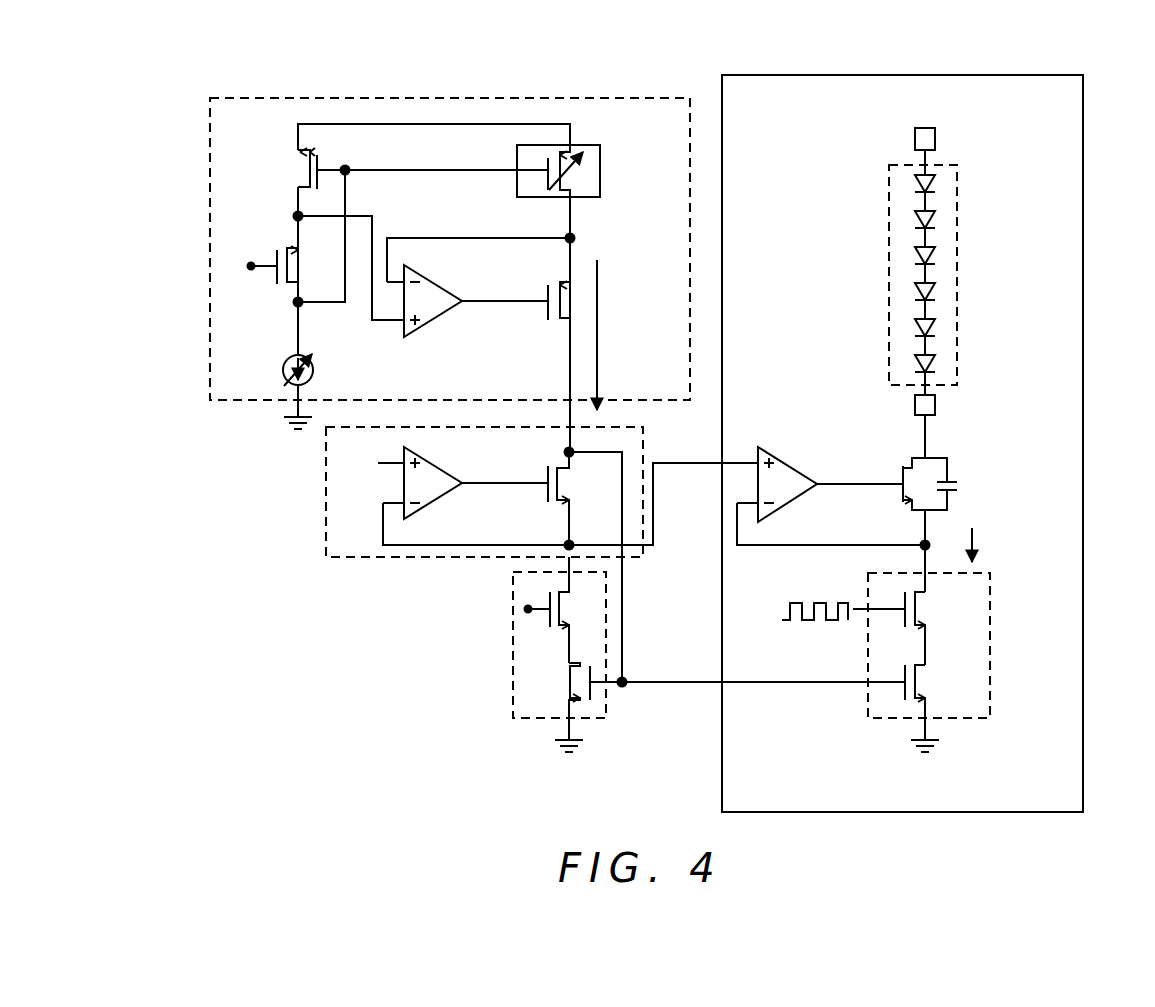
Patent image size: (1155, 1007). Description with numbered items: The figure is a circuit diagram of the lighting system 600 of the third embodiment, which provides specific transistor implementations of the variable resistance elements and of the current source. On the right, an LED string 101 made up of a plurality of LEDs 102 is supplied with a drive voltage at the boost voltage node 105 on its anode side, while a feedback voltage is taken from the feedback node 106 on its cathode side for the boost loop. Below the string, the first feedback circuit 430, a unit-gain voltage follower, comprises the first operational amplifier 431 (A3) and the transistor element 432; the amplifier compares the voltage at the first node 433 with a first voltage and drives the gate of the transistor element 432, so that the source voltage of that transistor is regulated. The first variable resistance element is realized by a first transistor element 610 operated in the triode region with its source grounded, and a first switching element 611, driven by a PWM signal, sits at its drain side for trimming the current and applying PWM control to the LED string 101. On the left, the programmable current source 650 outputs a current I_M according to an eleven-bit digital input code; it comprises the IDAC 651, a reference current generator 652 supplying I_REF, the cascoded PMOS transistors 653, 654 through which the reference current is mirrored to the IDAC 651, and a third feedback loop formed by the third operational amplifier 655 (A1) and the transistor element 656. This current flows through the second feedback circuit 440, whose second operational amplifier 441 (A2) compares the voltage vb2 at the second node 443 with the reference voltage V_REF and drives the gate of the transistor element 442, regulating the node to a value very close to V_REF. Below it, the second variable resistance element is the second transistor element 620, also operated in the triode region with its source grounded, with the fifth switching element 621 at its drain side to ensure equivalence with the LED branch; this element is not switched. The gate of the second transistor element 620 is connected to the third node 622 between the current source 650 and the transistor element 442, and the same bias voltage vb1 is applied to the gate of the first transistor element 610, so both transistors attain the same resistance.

The lighting system 600 is at (330, 45).
The current source 650 is at (667, 97).
The IDAC 651 is at (585, 155).
The reference current generator 652 is at (288, 358).
The cascoded PMOS transistor 653 is at (275, 262).
The cascoded PMOS transistor 654 is at (300, 174).
The third operational amplifier 655 is at (420, 282).
The transistor element 656 is at (564, 300).
The second feedback circuit 440 is at (326, 494).
The second operational amplifier 441 is at (420, 470).
The transistor element 442 is at (545, 472).
The second node 443 is at (573, 545).
The third node 622 is at (577, 449).
The fifth switching element 621 is at (525, 598).
The second transistor element 620 is at (569, 682).
The boost voltage node 105 is at (915, 140).
The LED string 101 is at (960, 186).
The LED 102 is at (910, 188).
The feedback node 106 is at (915, 407).
The first feedback circuit 430 is at (972, 510).
The first operational amplifier 431 is at (785, 468).
The transistor element 432 is at (950, 466).
The first node 433 is at (920, 543).
The first switching element 611 is at (930, 627).
The first transistor element 610 is at (930, 682).